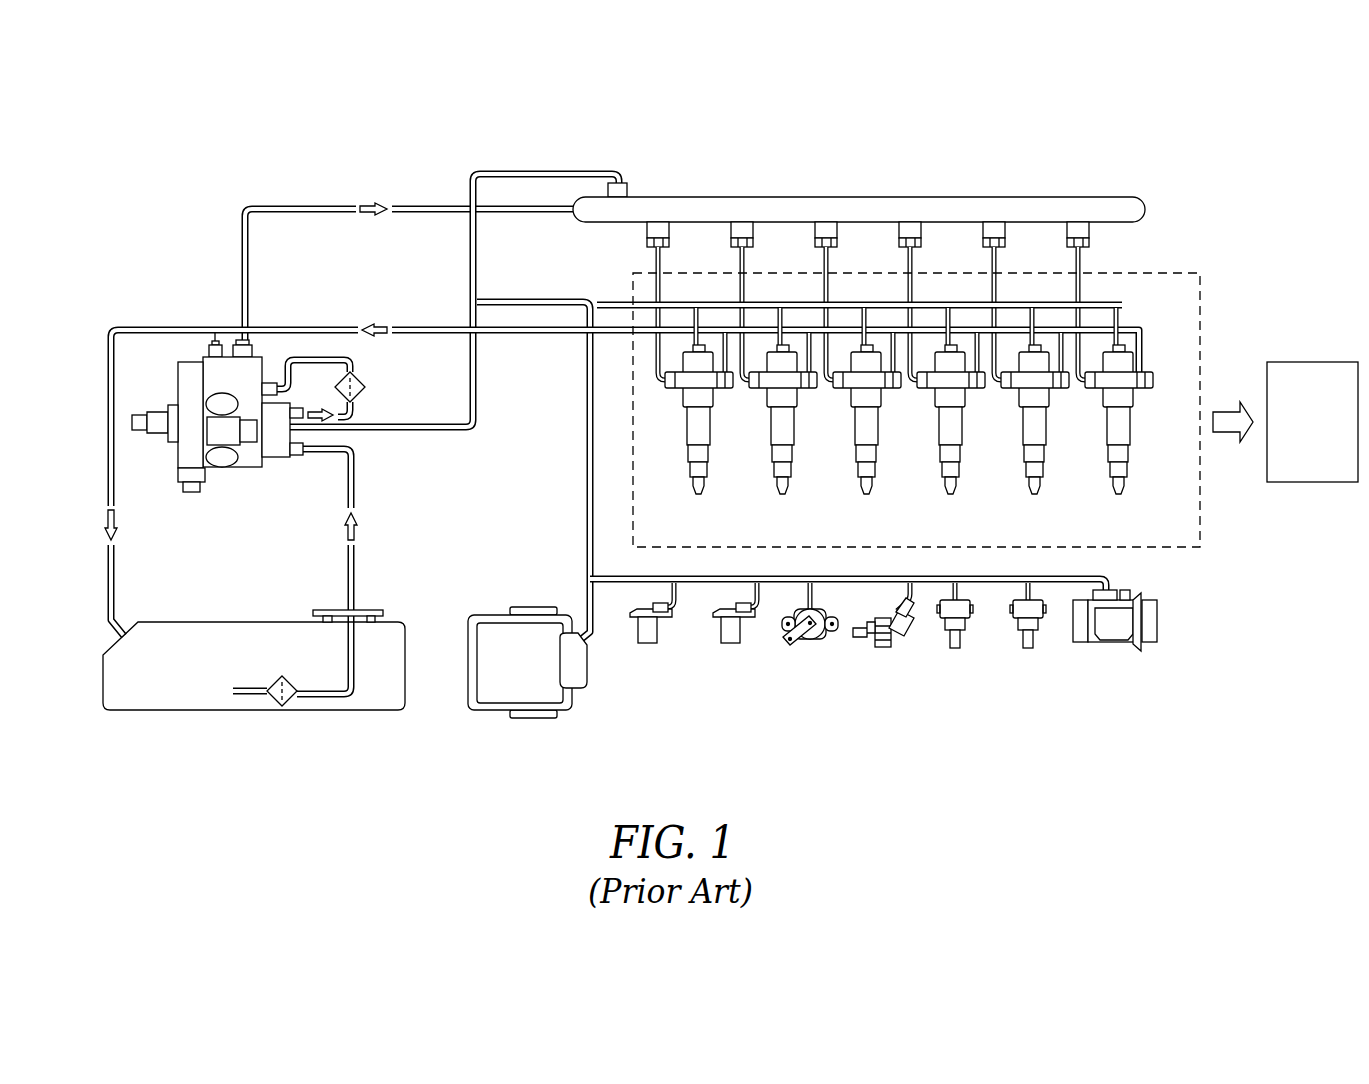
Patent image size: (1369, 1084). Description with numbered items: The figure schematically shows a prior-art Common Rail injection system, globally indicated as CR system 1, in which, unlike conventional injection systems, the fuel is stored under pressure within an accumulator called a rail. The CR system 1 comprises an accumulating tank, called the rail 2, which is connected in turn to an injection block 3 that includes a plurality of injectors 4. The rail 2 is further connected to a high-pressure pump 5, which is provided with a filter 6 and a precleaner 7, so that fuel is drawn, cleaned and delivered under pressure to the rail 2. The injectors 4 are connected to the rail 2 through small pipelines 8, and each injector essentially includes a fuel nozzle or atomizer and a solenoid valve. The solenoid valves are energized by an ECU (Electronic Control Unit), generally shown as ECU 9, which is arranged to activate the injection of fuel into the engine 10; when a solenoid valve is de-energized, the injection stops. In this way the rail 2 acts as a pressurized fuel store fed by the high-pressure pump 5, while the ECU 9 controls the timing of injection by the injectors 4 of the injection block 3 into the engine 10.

The CR system 1 is at (210, 147).
The rail 2 is at (953, 181).
The injection block 3 is at (1175, 390).
The injectors 4 is at (1107, 457).
The high-pressure pump 5 is at (185, 350).
The filter 6 is at (383, 402).
The precleaner 7 is at (180, 693).
The small pipelines 8 is at (1083, 297).
The ECU 9 is at (527, 680).
The engine 10 is at (1330, 436).